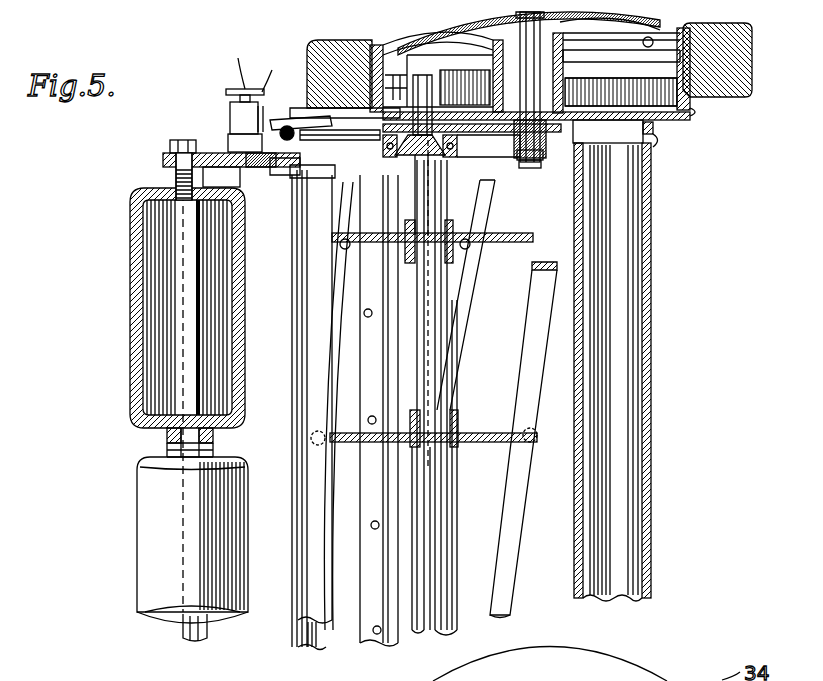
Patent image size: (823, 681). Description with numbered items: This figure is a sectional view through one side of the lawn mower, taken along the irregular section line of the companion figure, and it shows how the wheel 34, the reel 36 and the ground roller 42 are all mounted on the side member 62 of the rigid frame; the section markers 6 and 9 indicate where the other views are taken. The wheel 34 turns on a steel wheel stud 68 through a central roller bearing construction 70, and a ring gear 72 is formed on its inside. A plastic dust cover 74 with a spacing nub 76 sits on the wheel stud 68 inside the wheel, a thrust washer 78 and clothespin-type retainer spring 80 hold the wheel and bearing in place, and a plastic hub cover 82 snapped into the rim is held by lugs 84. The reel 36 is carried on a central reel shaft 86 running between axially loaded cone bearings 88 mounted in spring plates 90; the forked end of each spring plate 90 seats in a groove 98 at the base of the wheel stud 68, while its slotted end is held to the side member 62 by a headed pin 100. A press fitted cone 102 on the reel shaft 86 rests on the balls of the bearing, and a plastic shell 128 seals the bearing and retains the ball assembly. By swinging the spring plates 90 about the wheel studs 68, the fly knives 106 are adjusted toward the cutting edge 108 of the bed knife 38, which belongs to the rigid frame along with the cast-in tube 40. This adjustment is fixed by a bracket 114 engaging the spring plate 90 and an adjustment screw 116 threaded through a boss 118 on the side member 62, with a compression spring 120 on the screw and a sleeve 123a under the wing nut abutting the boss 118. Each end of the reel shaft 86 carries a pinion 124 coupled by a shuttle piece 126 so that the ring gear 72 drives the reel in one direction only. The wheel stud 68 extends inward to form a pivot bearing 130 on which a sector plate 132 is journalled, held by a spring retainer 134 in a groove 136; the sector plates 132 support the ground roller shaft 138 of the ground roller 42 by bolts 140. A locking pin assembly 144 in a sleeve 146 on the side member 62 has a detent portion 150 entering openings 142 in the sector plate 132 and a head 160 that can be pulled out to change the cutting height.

The wheel 34 is at (750, 28).
The reel 36 is at (528, 548).
The bed knife 38 is at (292, 236).
The tube 40 is at (652, 234).
The ground roller 42 is at (128, 226).
The side member 62 is at (380, 140).
The wheel stud 68 is at (570, 52).
The roller bearing construction 70 is at (510, 45).
The ring gear 72 is at (650, 30).
The dust cover 74 is at (692, 112).
The spacing nub 76 is at (572, 95).
The thrust washer 78 is at (565, 33).
The retainer spring 80 is at (572, 22).
The hub cover 82 is at (626, 82).
The lugs 84 is at (650, 38).
The reel shaft 86 is at (438, 378).
The cone bearing 88 is at (422, 158).
The spring plate 90 is at (339, 74).
The groove 98 is at (572, 150).
The headed pin 100 is at (318, 146).
The cone 102 is at (370, 95).
The fly knives 106 is at (466, 296).
The cutting edge 108 is at (393, 343).
The bracket 114 is at (300, 108).
The adjustment screw 116 is at (272, 175).
The boss 118 is at (345, 188).
The compression spring 120 is at (265, 78).
The sleeve 123a is at (280, 125).
The pinion 124 is at (450, 85).
The shuttle piece 126 is at (420, 90).
The shell 128 is at (478, 158).
The pivot bearing 130 is at (530, 162).
The sector plate 132 is at (185, 140).
The spring retainer 134 is at (632, 170).
The groove 136 is at (545, 170).
The ground roller shaft 138 is at (185, 367).
The bolts 140 is at (170, 150).
The openings 142 is at (230, 140).
The locking pin assembly 144 is at (226, 107).
The sleeve 146 is at (232, 112).
The detent portion 150 is at (227, 69).
The head 160 is at (228, 90).
The section line 6 is at (208, 281).
The section line 9 is at (243, 40).